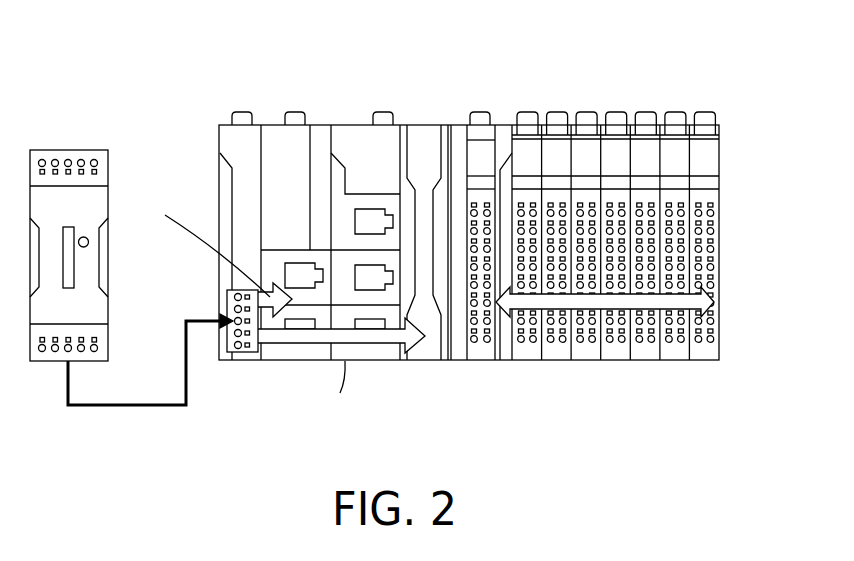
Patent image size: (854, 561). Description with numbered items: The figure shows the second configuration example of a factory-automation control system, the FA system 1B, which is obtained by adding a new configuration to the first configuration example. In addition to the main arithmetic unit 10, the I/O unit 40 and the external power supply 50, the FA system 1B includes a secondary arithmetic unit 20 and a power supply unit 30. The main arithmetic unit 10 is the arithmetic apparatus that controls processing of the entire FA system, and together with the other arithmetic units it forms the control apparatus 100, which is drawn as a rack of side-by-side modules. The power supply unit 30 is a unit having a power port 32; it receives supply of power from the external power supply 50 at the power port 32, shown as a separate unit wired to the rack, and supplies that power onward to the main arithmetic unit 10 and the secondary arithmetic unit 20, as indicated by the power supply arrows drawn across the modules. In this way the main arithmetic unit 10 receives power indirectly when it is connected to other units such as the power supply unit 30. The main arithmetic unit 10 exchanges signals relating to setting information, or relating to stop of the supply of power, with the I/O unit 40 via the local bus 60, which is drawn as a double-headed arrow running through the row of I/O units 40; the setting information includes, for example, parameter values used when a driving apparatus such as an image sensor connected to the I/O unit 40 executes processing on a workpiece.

The FA system 1B is at (803, 90).
The control apparatus 100 is at (513, 53).
The main arithmetic unit 10 is at (512, 100).
The secondary arithmetic unit 20 is at (327, 100).
The power supply unit 30 is at (260, 100).
The power port 32 is at (240, 352).
The I/O unit 40 is at (719, 102).
The external power supply 50 is at (108, 142).
The local bus 60 is at (612, 300).